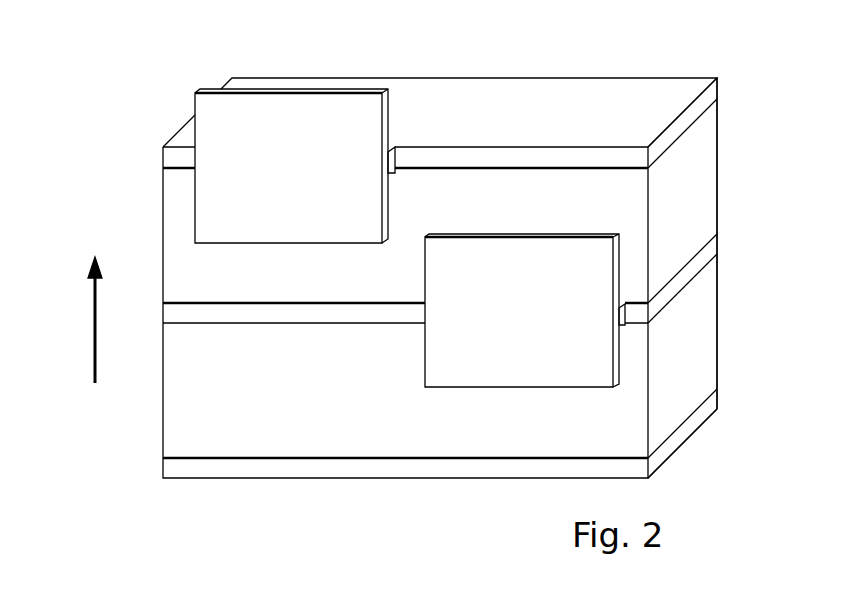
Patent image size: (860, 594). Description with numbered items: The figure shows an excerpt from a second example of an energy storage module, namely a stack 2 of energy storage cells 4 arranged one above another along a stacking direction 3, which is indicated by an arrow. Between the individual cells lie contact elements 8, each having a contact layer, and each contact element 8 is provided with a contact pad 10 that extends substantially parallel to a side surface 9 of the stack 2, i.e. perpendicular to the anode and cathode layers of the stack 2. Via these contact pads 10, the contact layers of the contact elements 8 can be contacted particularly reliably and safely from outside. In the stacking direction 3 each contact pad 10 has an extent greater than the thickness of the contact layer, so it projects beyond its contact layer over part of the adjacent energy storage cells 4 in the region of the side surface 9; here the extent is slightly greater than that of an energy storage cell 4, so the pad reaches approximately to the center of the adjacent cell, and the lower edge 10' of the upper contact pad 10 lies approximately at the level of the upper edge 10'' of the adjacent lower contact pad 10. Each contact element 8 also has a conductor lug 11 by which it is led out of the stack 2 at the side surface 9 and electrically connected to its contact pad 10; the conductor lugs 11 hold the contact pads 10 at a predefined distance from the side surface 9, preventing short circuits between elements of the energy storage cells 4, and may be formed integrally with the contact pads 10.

The stack 2 is at (432, 316).
The stacking direction 3 is at (95, 319).
The energy storage cell 4 is at (705, 335).
The contact element 8 is at (713, 250).
The side surface 9 is at (190, 376).
The contact pad 10 is at (407, 238).
The lower edge 10' is at (291, 195).
The upper edge 10'' is at (522, 282).
The conductor lug 11 is at (390, 172).